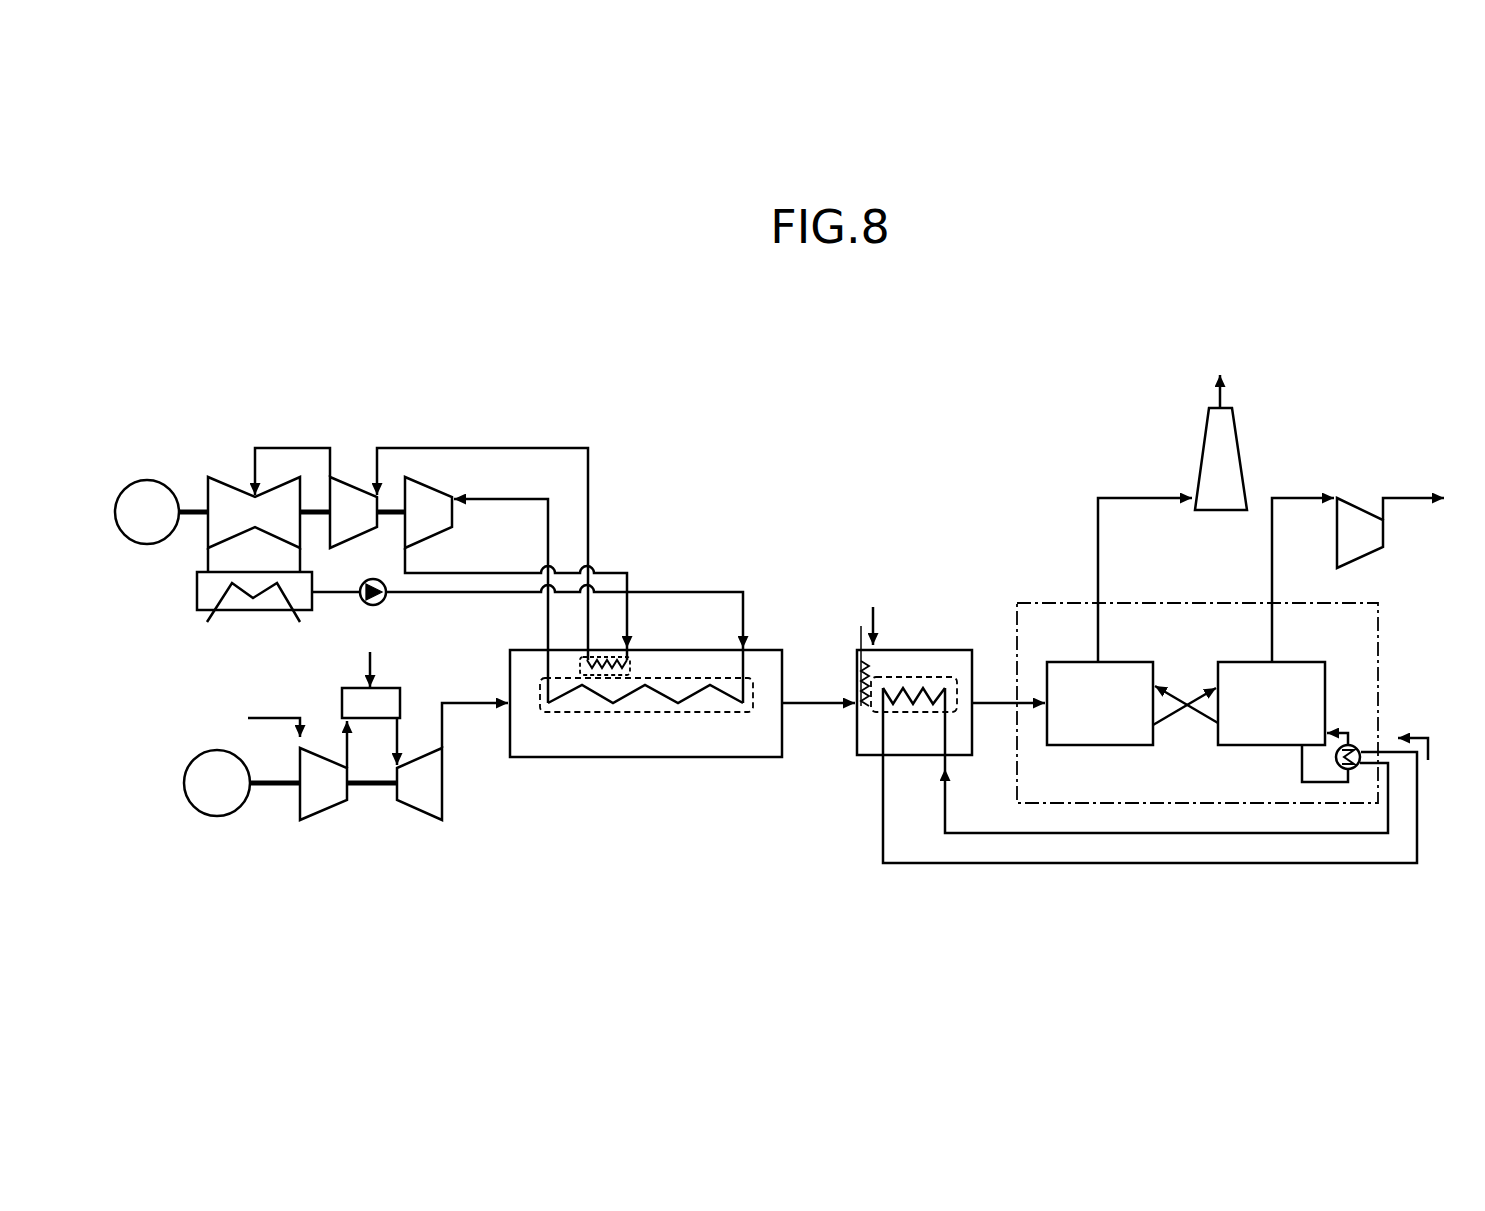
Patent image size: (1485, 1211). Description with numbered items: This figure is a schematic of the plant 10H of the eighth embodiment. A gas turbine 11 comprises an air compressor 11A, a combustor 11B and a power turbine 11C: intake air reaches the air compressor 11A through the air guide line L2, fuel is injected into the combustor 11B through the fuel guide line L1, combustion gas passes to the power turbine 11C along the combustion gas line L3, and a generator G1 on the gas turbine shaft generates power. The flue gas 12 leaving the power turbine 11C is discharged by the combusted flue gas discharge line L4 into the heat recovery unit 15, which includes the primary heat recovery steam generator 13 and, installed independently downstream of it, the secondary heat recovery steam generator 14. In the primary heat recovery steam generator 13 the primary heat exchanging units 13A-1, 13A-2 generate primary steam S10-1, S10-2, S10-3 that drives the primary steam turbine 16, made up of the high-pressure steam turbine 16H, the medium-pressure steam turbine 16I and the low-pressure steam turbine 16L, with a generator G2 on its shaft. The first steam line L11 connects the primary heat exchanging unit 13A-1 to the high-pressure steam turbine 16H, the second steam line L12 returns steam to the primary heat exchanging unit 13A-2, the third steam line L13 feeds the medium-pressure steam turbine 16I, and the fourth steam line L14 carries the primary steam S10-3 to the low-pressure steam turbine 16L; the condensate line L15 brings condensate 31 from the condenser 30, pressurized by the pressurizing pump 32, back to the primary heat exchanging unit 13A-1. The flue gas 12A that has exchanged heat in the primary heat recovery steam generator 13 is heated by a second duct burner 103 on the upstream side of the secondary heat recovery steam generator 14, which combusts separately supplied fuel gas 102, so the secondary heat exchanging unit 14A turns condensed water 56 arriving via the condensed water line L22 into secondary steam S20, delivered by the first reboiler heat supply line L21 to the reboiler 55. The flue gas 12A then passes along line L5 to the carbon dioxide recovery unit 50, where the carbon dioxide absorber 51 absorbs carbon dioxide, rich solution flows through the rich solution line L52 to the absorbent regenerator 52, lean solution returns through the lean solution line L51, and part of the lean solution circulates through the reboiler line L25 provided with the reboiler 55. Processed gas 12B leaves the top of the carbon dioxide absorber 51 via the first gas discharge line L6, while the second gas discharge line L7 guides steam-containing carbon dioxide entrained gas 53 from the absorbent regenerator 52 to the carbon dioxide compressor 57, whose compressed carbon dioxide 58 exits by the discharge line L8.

The plant 10H is at (958, 371).
The gas turbine 11 is at (371, 820).
The air compressor 11A is at (325, 812).
The combustor 11B is at (372, 718).
The power turbine 11C is at (424, 825).
The flue gas 12 is at (492, 717).
The flue gas 12A is at (1010, 717).
The processed gas 12B is at (1222, 392).
The primary heat recovery steam generator 13 is at (646, 607).
The primary heat exchanging unit 13A-1 is at (692, 678).
The primary heat exchanging unit 13A-2 is at (608, 658).
The secondary heat recovery steam generator 14 is at (881, 670).
The secondary heat exchanging unit 14A is at (908, 712).
The heat recovery unit 15 is at (887, 462).
The primary steam turbine 16 is at (345, 431).
The low-pressure steam turbine 16L is at (285, 482).
The medium-pressure steam turbine 16I is at (352, 482).
The high-pressure steam turbine 16H is at (440, 456).
The condenser 30 is at (197, 592).
The condensate 31 is at (313, 580).
The pressurizing pump 32 is at (387, 598).
The CO2 recovery unit 50 is at (1378, 620).
The CO2 absorber 51 is at (1112, 661).
The absorbent regenerator 52 is at (1283, 661).
The CO2 entrained gas 53 is at (1283, 559).
The reboiler 55 is at (1356, 746).
The condensed water 56 is at (1342, 847).
The CO2 compressor 57 is at (1358, 508).
The compressed CO2 58 is at (1393, 487).
The fuel gas 102 is at (871, 611).
The second duct burner 103 is at (863, 715).
The generator G1 is at (242, 783).
The generator G2 is at (161, 512).
The fuel guide line L1 is at (372, 662).
The air guide line L2 is at (276, 716).
The combustion gas line L3 is at (398, 738).
The combusted flue gas discharge line L4 is at (470, 700).
The exhaust gas line L5 is at (992, 700).
The first gas discharge line L6 is at (1141, 497).
The second gas discharge line L7 is at (1298, 497).
The discharge line L8 is at (1410, 505).
The first steam line L11 is at (548, 510).
The second steam line L12 is at (482, 571).
The third steam line L13 is at (588, 462).
The fourth steam line L14 is at (292, 448).
The condensate line L15 is at (485, 595).
The first reboiler heat supply line L21 is at (964, 867).
The condensed water line L22 is at (1081, 837).
The reboiler line L25 is at (1298, 765).
The lean solution line L51 is at (1202, 722).
The rich solution line L52 is at (1192, 698).
The primary steam S10-1 is at (507, 487).
The primary steam S10-2 is at (543, 435).
The primary steam S10-3 is at (293, 435).
The secondary steam S20 is at (921, 875).